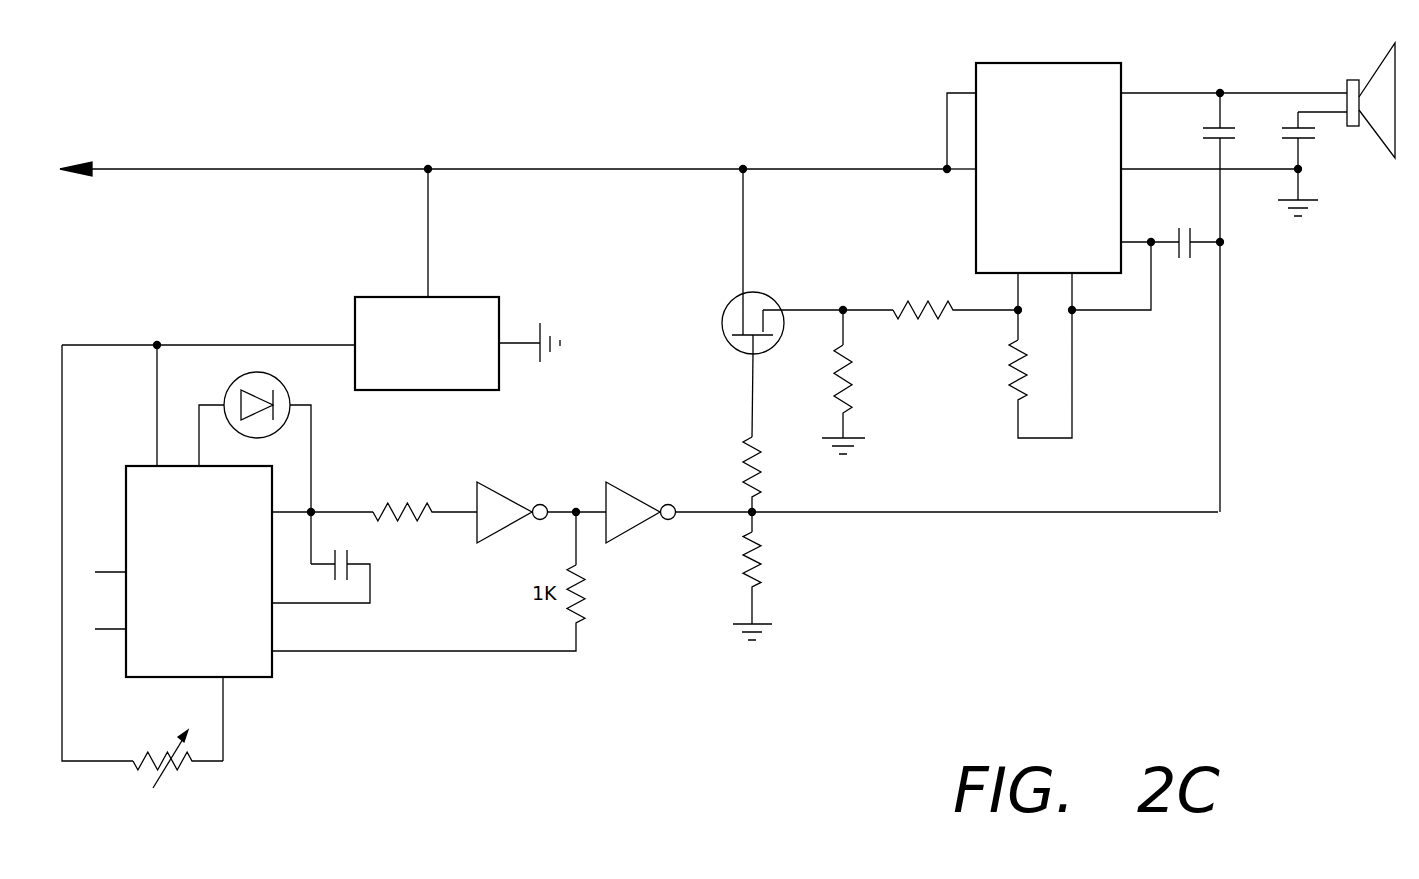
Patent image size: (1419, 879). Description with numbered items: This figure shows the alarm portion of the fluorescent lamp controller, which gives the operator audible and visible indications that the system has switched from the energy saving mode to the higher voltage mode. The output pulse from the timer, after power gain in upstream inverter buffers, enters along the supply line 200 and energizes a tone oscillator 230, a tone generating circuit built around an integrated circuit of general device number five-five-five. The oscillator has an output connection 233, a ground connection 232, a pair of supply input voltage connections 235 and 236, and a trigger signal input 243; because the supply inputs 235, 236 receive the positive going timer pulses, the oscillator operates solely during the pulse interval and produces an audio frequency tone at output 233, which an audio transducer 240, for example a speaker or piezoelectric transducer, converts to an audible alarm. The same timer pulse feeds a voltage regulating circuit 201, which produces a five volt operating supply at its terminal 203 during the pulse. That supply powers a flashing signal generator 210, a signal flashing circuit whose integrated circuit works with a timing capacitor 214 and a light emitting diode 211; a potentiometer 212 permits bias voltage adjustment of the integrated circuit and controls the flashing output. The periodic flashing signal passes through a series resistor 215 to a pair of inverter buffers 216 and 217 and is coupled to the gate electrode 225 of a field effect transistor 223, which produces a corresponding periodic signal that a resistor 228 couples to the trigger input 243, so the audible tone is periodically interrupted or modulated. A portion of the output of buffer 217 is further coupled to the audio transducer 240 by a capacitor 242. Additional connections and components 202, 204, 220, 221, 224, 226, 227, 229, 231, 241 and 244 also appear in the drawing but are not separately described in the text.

The power supply line from 134 200 is at (431, 166).
The voltage regulating circuit 201 is at (460, 296).
The regulator input pin 1 lead 202 is at (424, 294).
The terminal 203 is at (352, 342).
The regulator ground pin 2 204 is at (501, 342).
The flashing signal generator 210 is at (138, 494).
The light emitting diode 211 is at (234, 382).
The potentiometer 212 is at (181, 770).
The timing capacitor 214 is at (352, 576).
The series resistor 215 is at (393, 497).
The inverter buffer 216 is at (503, 532).
The inverter buffer 217 is at (632, 532).
The resistor to ground 220 is at (765, 572).
The 100K resistor 221 is at (748, 445).
The field effect transistor 223 is at (772, 278).
The gate node 224 is at (813, 307).
The gate electrode 225 is at (751, 396).
The drain lead 226 is at (741, 221).
The 1K resistor 227 is at (855, 387).
The resistor 228 is at (921, 323).
The 1K resistor 229 is at (1013, 394).
The tone oscillator 230 is at (1070, 62).
The 103 capacitor 231 is at (1178, 235).
The ground connection 232 is at (1122, 167).
The output connection 233 is at (1122, 91).
The supply input voltage connection 235 is at (975, 92).
The supply input voltage connection 236 is at (969, 181).
The audio transducer 240 is at (1378, 72).
The 4.7 capacitor 241 is at (1281, 134).
The capacitor 242 is at (1226, 126).
The trigger signal input 243 is at (1017, 285).
The timer pin 6 lead 244 is at (1073, 285).